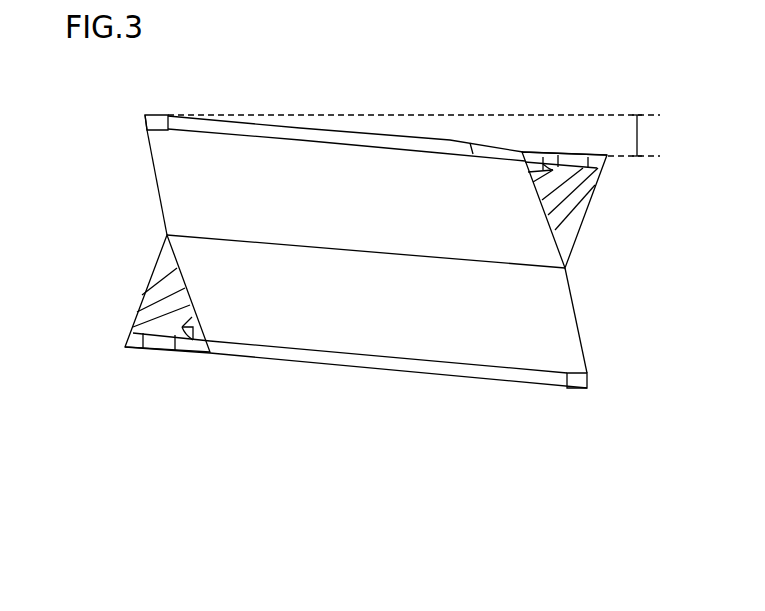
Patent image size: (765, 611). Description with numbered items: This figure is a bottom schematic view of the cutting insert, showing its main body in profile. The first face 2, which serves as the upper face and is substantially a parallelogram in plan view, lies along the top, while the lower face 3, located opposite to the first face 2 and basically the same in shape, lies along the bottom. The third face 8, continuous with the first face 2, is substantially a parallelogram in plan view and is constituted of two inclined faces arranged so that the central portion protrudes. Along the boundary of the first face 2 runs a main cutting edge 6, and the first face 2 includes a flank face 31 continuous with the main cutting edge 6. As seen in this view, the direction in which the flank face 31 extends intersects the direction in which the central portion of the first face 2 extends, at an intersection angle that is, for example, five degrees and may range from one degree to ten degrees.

The first face 2 is at (393, 131).
The lower face 3 is at (389, 373).
The flank face 31 is at (155, 114).
The main cutting edge 6 is at (146, 124).
The third face 8 is at (525, 240).